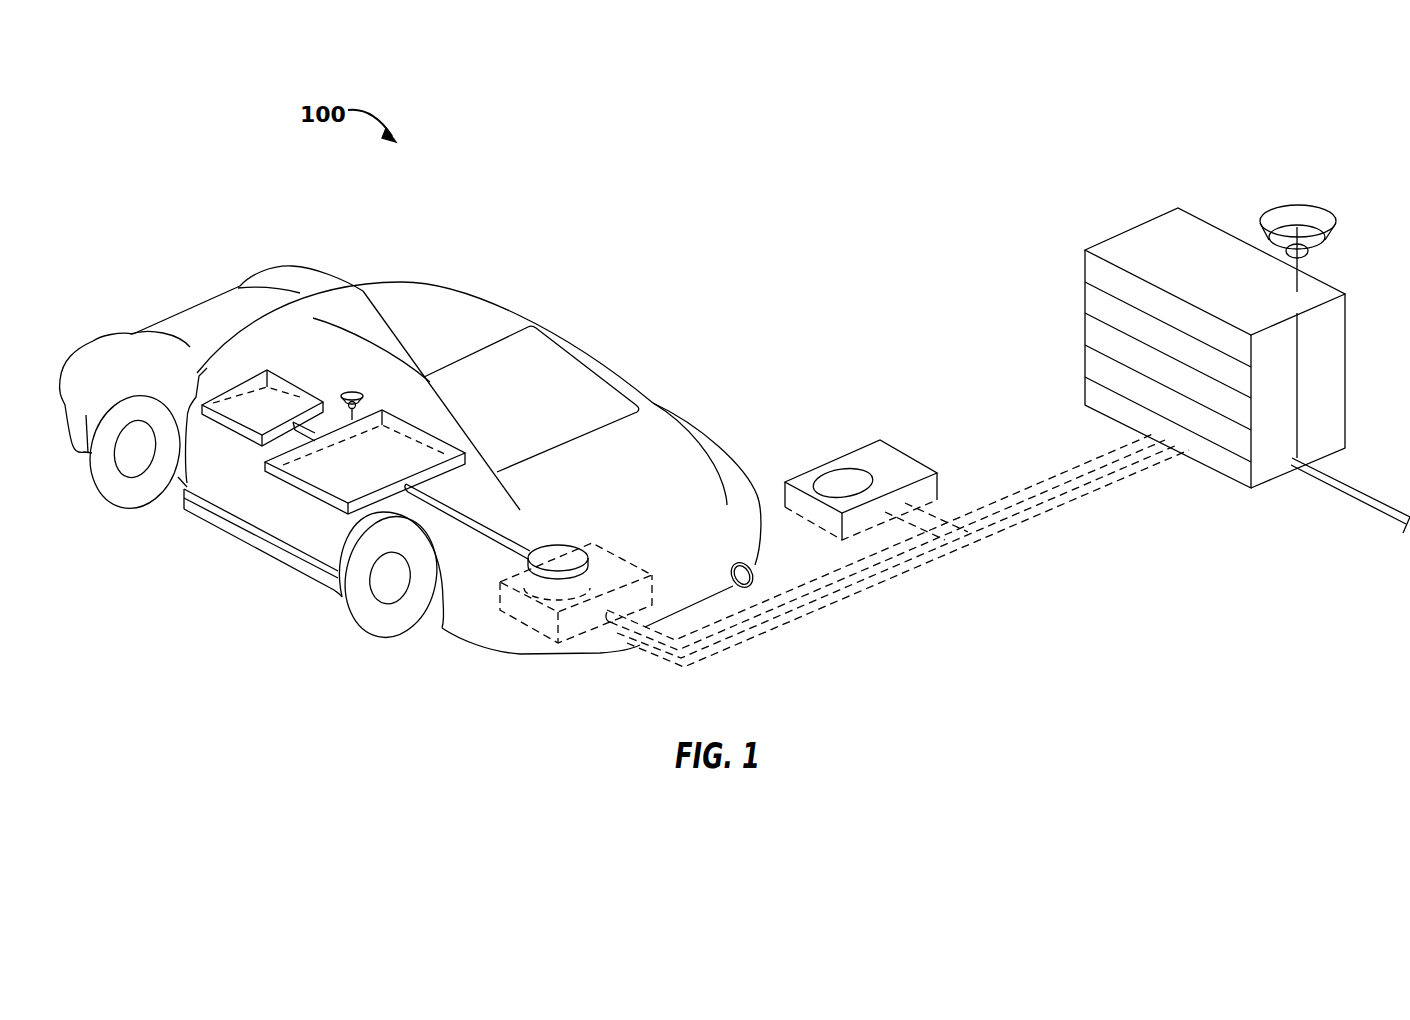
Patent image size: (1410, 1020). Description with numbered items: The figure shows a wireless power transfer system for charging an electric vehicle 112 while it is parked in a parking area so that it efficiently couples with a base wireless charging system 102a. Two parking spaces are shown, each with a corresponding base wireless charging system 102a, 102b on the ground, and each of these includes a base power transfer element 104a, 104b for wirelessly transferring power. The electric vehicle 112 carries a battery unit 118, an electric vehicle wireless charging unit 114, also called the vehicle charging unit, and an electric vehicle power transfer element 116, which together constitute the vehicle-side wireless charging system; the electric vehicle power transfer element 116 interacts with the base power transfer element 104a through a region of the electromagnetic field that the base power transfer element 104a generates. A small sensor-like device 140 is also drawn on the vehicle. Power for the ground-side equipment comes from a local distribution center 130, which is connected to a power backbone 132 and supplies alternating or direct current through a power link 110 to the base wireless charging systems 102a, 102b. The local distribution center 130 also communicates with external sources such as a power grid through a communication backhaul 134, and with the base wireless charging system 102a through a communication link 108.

The electric vehicle 112 is at (185, 313).
The base wireless charging system 102a is at (474, 635).
The base power transfer element 104a is at (620, 548).
The electric vehicle power transfer element 116 is at (562, 543).
The electric vehicle wireless charging unit 114 is at (267, 458).
The battery unit 118 is at (227, 385).
The vehicle antenna/sensor 140 is at (351, 390).
The base wireless charging system 102b is at (852, 447).
The base power transfer element 104b is at (867, 475).
The communication link 108 is at (1065, 466).
The power link 110 is at (1062, 510).
The local distribution center 130 is at (1124, 233).
The communication backhaul 134 is at (1298, 203).
The power backbone 132 is at (1355, 498).